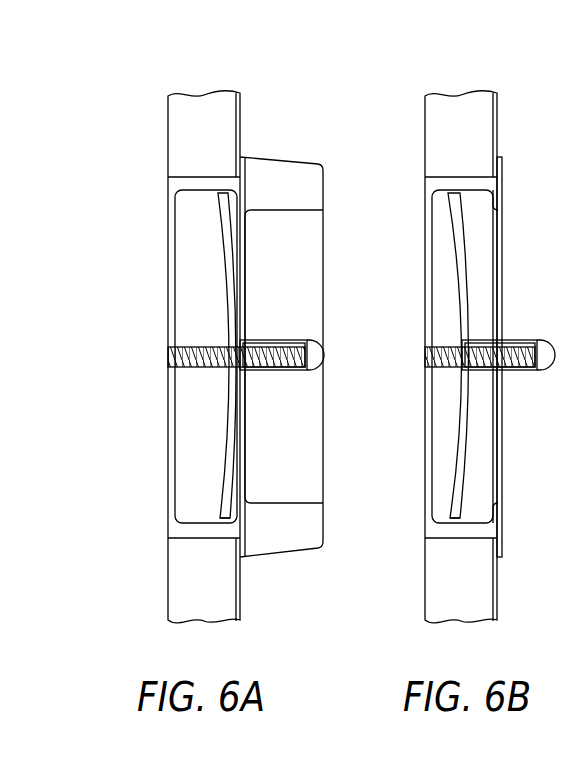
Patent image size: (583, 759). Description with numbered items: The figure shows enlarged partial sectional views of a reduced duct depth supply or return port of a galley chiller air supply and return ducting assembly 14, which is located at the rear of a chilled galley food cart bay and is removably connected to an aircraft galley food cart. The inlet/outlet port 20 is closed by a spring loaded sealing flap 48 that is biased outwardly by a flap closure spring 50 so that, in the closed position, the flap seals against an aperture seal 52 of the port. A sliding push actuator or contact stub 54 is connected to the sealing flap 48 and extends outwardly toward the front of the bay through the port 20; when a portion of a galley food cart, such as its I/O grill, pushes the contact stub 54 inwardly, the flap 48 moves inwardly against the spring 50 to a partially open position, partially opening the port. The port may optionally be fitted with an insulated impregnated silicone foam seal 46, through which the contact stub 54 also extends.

In FIG. 6A, the galley chiller air supply and return ducting assembly 14 is at (240, 62).
In FIG. 6B, the galley chiller air supply and return ducting assembly 14 is at (478, 62).
In FIG. 6A, the inlet/outlet port 20 is at (185, 232).
In FIG. 6B, the inlet/outlet port 20 is at (480, 250).
In FIG. 6A, the impregnated silicone foam seal 46 is at (273, 172).
In FIG. 6B, the impregnated silicone foam seal 46 is at (497, 357).
In FIG. 6A, the spring loaded sealing flap 48 is at (228, 453).
In FIG. 6B, the spring loaded sealing flap 48 is at (467, 415).
In FIG. 6A, the flap closure spring 50 is at (165, 359).
In FIG. 6B, the flap closure spring 50 is at (428, 356).
In FIG. 6A, the aperture seal 52 is at (238, 512).
In FIG. 6B, the aperture seal 52 is at (487, 512).
In FIG. 6A, the sliding push actuator or contact stub 54 is at (283, 341).
In FIG. 6B, the sliding push actuator or contact stub 54 is at (513, 341).